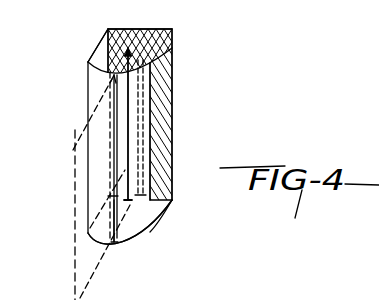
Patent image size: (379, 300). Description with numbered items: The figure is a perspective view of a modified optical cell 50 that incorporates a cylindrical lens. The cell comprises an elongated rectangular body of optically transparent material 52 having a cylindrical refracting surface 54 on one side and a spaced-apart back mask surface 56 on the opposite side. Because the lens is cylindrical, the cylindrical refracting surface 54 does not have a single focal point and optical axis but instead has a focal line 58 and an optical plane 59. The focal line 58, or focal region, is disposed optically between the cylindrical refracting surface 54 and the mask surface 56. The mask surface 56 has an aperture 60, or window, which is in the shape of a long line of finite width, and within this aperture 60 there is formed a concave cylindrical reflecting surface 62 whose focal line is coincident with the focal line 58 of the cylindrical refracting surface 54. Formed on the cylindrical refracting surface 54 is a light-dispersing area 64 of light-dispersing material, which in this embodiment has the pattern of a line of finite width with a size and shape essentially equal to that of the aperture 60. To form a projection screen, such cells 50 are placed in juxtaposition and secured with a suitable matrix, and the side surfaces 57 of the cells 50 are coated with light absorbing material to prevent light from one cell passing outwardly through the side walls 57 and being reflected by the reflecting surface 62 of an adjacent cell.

The modified optical cell 50 is at (86, 48).
The optically transparent material 52 is at (100, 53).
The cylindrical refracting surface 54 is at (153, 237).
The back mask surface 56 is at (164, 87).
The side surfaces 57 is at (168, 209).
The focal line 58 is at (115, 42).
The optical plane 59 is at (90, 251).
The aperture 60 is at (139, 30).
The cylindrical reflecting surface 62 is at (142, 135).
The light-dispersing area 64 is at (119, 218).